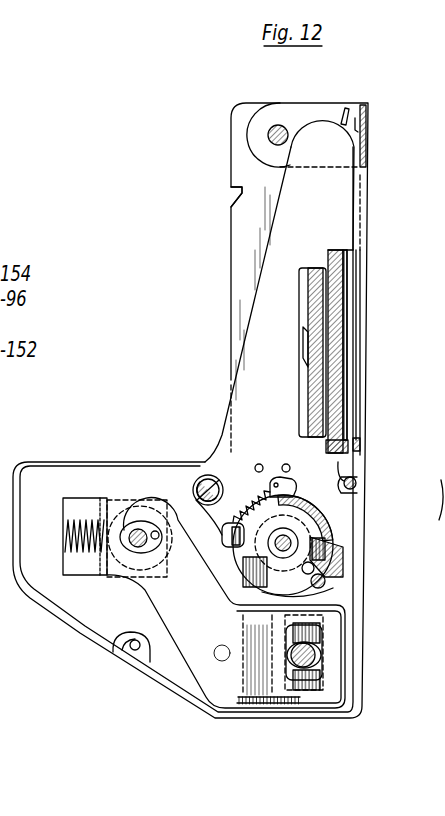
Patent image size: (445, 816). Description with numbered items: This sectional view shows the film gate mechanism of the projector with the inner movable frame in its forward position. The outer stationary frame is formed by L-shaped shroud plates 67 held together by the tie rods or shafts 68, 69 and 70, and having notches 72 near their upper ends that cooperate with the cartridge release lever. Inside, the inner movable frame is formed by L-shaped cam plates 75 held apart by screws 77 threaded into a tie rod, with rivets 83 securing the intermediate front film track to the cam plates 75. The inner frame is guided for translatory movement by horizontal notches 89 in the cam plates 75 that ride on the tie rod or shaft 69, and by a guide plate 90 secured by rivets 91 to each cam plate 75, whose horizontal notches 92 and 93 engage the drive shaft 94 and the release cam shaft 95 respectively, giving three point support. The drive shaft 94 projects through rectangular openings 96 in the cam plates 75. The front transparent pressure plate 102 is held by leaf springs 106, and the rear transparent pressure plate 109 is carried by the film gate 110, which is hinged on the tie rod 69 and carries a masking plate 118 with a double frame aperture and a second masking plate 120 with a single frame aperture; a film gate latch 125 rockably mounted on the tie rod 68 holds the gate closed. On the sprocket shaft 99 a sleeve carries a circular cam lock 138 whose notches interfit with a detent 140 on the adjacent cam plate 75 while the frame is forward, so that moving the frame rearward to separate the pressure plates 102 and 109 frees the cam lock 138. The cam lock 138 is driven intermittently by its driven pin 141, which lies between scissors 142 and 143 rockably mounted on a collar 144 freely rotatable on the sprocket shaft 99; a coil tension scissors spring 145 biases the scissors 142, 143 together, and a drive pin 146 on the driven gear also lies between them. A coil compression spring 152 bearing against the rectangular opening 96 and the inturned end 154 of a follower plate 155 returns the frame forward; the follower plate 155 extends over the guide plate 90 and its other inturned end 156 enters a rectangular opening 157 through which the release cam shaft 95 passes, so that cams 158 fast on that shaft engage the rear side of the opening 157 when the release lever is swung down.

The shroud plates 67 is at (241, 223).
The tie rod or shaft 68 is at (282, 125).
The tie rod or shaft 69 is at (357, 483).
The tie rod or shaft 70 is at (138, 652).
The notches 72 is at (228, 190).
The cam plates 75 is at (263, 278).
The screws 77 is at (212, 473).
The rivets 83 is at (286, 463).
The horizontal notches 89 is at (360, 455).
The guide plate 90 is at (190, 679).
The rivets 91 is at (186, 574).
The horizontal notch 92 is at (160, 500).
The horizontal notch 93 is at (318, 655).
The drive shaft 94 is at (129, 541).
The release cam shaft 95 is at (318, 667).
The rectangular openings 96 is at (72, 500).
The sprocket shaft 99 is at (287, 534).
The front transparent pressure plate 102 is at (312, 307).
The leaf springs 106 is at (305, 352).
The rear transparent pressure plate 109 is at (331, 286).
The film gate 110 is at (413, 268).
The masking plate 118 is at (344, 278).
The second masking plate 120 is at (341, 303).
The film gate latch 125 is at (329, 109).
The cam lock 138 is at (328, 508).
The detent 140 is at (318, 542).
The driven pin 141 is at (313, 565).
The scissors 142 is at (340, 570).
The scissors 143 is at (305, 592).
The collar 144 is at (268, 560).
The coil tension scissors spring 145 is at (250, 494).
The drive pin 146 is at (326, 585).
The coil compression spring 152 is at (90, 557).
The inturned end 154 is at (98, 500).
The follower plate 155 is at (190, 637).
The inturned end 156 is at (285, 692).
The rectangular opening 157 is at (307, 692).
The cams 158 is at (283, 660).